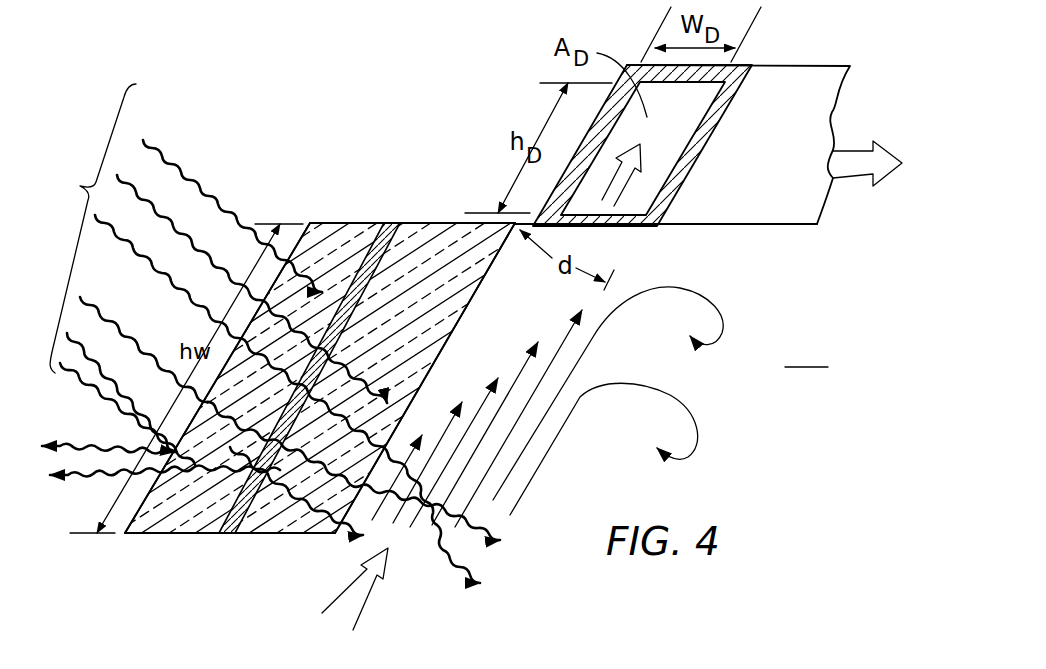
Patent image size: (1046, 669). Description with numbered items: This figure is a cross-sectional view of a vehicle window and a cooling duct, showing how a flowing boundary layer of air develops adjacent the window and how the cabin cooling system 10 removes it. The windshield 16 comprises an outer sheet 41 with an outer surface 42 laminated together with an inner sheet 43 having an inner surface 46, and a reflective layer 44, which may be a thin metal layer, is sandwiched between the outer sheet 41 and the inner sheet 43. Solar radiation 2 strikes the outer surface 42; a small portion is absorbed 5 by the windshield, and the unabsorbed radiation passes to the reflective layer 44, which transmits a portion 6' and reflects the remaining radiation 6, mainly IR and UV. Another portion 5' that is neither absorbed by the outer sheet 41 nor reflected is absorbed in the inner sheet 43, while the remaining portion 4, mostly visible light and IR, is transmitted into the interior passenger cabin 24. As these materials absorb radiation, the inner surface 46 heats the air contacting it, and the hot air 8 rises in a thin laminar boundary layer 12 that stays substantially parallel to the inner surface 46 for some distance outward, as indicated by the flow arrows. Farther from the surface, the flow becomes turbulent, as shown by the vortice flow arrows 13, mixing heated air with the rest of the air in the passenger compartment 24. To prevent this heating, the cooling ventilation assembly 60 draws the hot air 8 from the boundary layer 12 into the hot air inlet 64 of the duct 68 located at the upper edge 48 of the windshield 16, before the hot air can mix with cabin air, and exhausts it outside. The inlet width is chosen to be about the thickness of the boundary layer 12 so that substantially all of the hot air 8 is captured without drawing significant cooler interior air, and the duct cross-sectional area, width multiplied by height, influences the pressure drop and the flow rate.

The solar radiation 2 is at (218, 274).
The remaining portion of the solar radiation 4 is at (465, 575).
The absorbed solar radiation 5 is at (320, 375).
The portion of the solar radiation absorbed by the inner layer 5' is at (320, 375).
The reflected radiation 6 is at (161, 441).
The transmitted portion of the solar radiation 6' is at (290, 440).
The hot air 8 is at (858, 152).
The cabin cooling system 10 is at (428, 108).
The laminar flowing boundary layer 12 is at (400, 450).
The vortice flow arrows 13 is at (723, 302).
The windshield 16 is at (187, 537).
The interior passenger cabin 24 is at (806, 352).
The outer sheet 41 is at (153, 534).
The outer surface 42 is at (125, 512).
The inner sheet 43 is at (248, 537).
The reflective layer 44 is at (220, 533).
The inner surface 46 is at (340, 540).
The upper edge 48 is at (453, 223).
The cooling ventilation assembly 60 is at (772, 64).
The hot air inlet 64 is at (563, 227).
The duct 68 is at (767, 227).